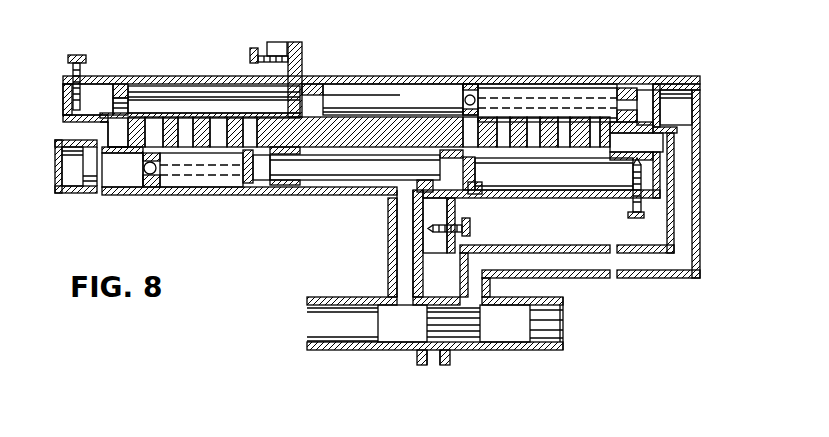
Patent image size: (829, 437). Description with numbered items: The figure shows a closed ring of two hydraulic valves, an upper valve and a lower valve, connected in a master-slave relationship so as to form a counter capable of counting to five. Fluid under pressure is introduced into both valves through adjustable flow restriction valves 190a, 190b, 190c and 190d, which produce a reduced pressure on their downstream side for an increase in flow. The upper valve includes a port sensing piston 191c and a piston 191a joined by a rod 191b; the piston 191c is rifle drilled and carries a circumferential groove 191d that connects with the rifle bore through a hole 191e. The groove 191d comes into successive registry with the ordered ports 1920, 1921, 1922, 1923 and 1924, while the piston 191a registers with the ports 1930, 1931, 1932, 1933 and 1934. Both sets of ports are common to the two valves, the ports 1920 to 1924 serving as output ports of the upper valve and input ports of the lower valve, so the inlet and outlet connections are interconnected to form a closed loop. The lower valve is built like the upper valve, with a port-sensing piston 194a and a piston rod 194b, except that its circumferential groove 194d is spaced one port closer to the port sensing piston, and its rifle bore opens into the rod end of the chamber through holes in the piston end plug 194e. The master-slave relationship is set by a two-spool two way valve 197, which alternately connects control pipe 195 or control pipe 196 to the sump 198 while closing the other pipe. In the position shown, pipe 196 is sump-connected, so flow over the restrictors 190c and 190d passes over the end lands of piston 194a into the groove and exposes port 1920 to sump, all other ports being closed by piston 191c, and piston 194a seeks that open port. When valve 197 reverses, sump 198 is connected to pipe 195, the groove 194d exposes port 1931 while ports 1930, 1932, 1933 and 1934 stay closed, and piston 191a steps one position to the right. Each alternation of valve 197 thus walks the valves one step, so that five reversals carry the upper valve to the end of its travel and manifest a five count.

The adjustable flow restriction valve 190a is at (72, 58).
The adjustable flow restriction valve 190b is at (254, 48).
The adjustable flow restriction valve 190c is at (631, 215).
The adjustable flow restriction valve 190d is at (472, 228).
The piston 191a is at (122, 92).
The rod 191b is at (190, 98).
The port sensing piston 191c is at (352, 95).
The circumferential groove 191d is at (470, 95).
The hole 191e is at (473, 102).
The port 1930 is at (118, 134).
The port 1931 is at (155, 140).
The port 1932 is at (184, 140).
The port 1933 is at (216, 141).
The port 1934 is at (256, 130).
The port 1920 is at (466, 160).
The port 1921 is at (498, 141).
The port 1922 is at (533, 141).
The port 1923 is at (573, 143).
The port 1924 is at (613, 143).
The port-sensing piston 194a is at (477, 198).
The piston rod 194b is at (340, 178).
The circumferential groove 194d is at (153, 187).
The ball valve 194e is at (146, 168).
The control pipe 195 is at (400, 260).
The control pipe 196 is at (588, 263).
The two-spool two way valve 197 is at (547, 325).
The sump 198 is at (440, 357).